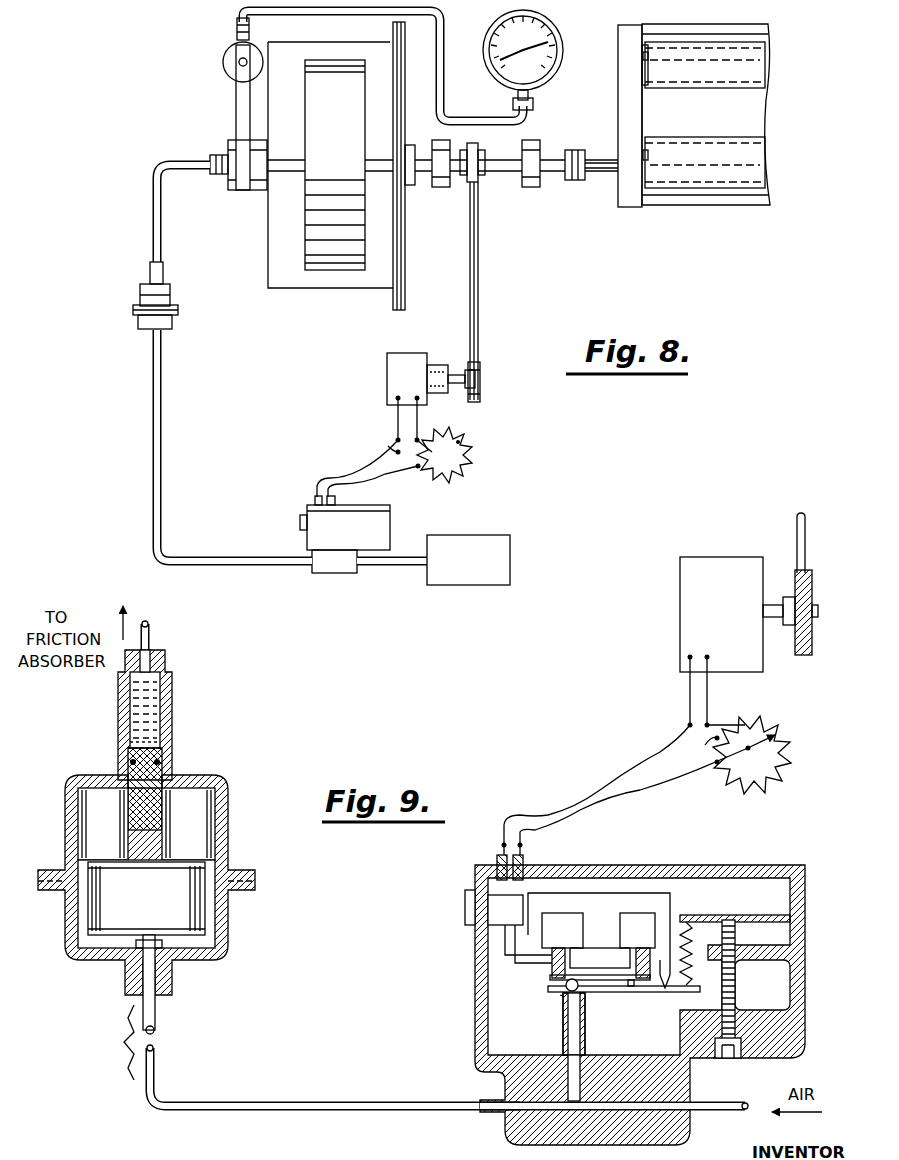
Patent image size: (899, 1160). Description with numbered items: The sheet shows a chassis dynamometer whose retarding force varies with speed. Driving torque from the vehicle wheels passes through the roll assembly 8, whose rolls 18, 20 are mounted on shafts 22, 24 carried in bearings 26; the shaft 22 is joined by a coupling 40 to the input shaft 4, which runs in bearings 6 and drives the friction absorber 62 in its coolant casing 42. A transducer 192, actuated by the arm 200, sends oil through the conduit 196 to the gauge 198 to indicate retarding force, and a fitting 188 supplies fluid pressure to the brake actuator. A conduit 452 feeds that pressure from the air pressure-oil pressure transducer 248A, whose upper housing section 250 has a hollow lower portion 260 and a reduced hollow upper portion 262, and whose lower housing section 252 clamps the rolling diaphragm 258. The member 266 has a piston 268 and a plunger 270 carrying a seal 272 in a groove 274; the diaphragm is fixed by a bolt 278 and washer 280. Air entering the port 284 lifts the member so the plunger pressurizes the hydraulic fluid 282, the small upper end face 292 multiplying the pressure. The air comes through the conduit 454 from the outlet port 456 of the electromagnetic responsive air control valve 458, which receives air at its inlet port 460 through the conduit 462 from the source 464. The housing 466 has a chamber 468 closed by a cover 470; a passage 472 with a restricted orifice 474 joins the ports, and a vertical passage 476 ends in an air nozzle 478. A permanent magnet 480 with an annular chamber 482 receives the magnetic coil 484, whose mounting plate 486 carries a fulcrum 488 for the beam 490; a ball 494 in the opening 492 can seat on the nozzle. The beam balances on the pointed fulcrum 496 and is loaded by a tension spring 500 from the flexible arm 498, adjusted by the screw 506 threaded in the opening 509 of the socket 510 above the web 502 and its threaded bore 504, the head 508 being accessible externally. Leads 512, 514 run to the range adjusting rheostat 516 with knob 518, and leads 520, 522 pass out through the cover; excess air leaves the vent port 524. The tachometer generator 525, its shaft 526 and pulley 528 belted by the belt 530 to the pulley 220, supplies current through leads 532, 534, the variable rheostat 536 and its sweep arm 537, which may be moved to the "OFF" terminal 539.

In FIG. 8, the input shaft 4 is at (498, 173).
In FIG. 8, the bearings 6 is at (441, 188).
In FIG. 8, the roll assembly 8 is at (700, 115).
In FIG. 8, the roll 18 is at (703, 152).
In FIG. 8, the roll 20 is at (707, 80).
In FIG. 8, the shaft 22 is at (598, 164).
In FIG. 8, the shaft 24 is at (652, 70).
In FIG. 8, the bearings 26 is at (643, 57).
In FIG. 8, the coupling 40 is at (575, 150).
In FIG. 8, the coolant casing 42 is at (410, 258).
In FIG. 8, the friction absorber 62 is at (325, 274).
In FIG. 8, the fitting 188 is at (217, 176).
In FIG. 8, the transducer 192 is at (222, 60).
In FIG. 8, the conduit 196 is at (238, 24).
In FIG. 8, the gauge 198 is at (562, 34).
In FIG. 8, the arm 200 is at (236, 108).
In FIG. 8, the pulley 220 is at (481, 152).
In FIG. 8, the air pressure-oil pressure transducer 248A is at (178, 292).
In FIG. 9, the air pressure-oil pressure transducer 248A is at (167, 824).
In FIG. 9, the upper housing section 250 is at (220, 796).
In FIG. 9, the lower housing section 252 is at (228, 910).
In FIG. 9, the rolling diaphragm 258 is at (256, 882).
In FIG. 9, the hollow lower portion 260 is at (80, 822).
In FIG. 9, the reduced hollow upper portion 262 is at (172, 690).
In FIG. 9, the member 266 is at (181, 852).
In FIG. 9, the piston 268 is at (118, 868).
In FIG. 9, the plunger 270 is at (128, 805).
In FIG. 9, the seal 272 is at (126, 761).
In FIG. 9, the groove 274 is at (172, 765).
In FIG. 9, the bolt 278 is at (190, 975).
In FIG. 9, the washer 280 is at (125, 950).
In FIG. 9, the hydraulic fluid 282 is at (136, 706).
In FIG. 9, the port 284 is at (156, 1004).
In FIG. 9, the upper end face 292 is at (130, 736).
In FIG. 8, the conduit 452 is at (154, 212).
In FIG. 9, the conduit 452 is at (152, 640).
In FIG. 8, the conduit 454 is at (158, 458).
In FIG. 9, the conduit 454 is at (160, 1062).
In FIG. 9, the outlet port 456 is at (496, 1119).
In FIG. 8, the electromagnetic responsive air control valve 458 is at (335, 527).
In FIG. 9, the electromagnetic responsive air control valve 458 is at (638, 935).
In FIG. 9, the inlet port 460 is at (695, 1106).
In FIG. 8, the conduit 462 is at (400, 568).
In FIG. 9, the conduit 462 is at (705, 1112).
In FIG. 8, the source 464 is at (468, 535).
In FIG. 8, the housing 466 is at (386, 530).
In FIG. 9, the housing 466 is at (795, 985).
In FIG. 9, the chamber 468 is at (700, 874).
In FIG. 8, the cover 470 is at (360, 508).
In FIG. 9, the cover 470 is at (725, 866).
In FIG. 9, the passage 472 is at (645, 1133).
In FIG. 9, the restricted orifice 474 is at (600, 1066).
In FIG. 9, the vertical passage 476 is at (577, 1060).
In FIG. 9, the air nozzle 478 is at (565, 1026).
In FIG. 9, the permanent magnet 480 is at (602, 893).
In FIG. 9, the annular chamber 482 is at (632, 921).
In FIG. 9, the magnetic coil 484 is at (552, 958).
In FIG. 9, the mounting plate 486 is at (603, 985).
In FIG. 9, the fulcrum 488 is at (617, 1035).
In FIG. 9, the beam 490 is at (598, 994).
In FIG. 9, the opening 492 is at (556, 998).
In FIG. 9, the ball 494 is at (562, 988).
In FIG. 9, the pointed fulcrum 496 is at (634, 990).
In FIG. 9, the flexible arm 498 is at (745, 915).
In FIG. 9, the tension spring 500 is at (701, 929).
In FIG. 9, the web 502 is at (740, 958).
In FIG. 9, the threaded bore 504 is at (738, 935).
In FIG. 9, the screw 506 is at (741, 991).
In FIG. 9, the head 508 is at (735, 1056).
In FIG. 9, the opening 509 is at (742, 1030).
In FIG. 9, the socket 510 is at (742, 1044).
In FIG. 9, the lead 512 is at (500, 963).
In FIG. 9, the lead 514 is at (500, 955).
In FIG. 9, the range adjusting rheostat 516 is at (490, 932).
In FIG. 8, the external operating knob 518 is at (299, 541).
In FIG. 9, the external operating knob 518 is at (466, 905).
In FIG. 8, the lead 520 is at (346, 478).
In FIG. 9, the lead 520 is at (500, 857).
In FIG. 8, the lead 522 is at (376, 474).
In FIG. 9, the lead 522 is at (530, 870).
In FIG. 9, the vent port 524 is at (480, 1040).
In FIG. 8, the tachometer generator 525 is at (411, 366).
In FIG. 9, the tachometer generator 525 is at (721, 571).
In FIG. 8, the shaft 526 is at (479, 378).
In FIG. 9, the shaft 526 is at (788, 596).
In FIG. 8, the pulley 528 is at (478, 362).
In FIG. 9, the pulley 528 is at (813, 652).
In FIG. 8, the belt 530 is at (480, 232).
In FIG. 9, the belt 530 is at (806, 520).
In FIG. 8, the lead 532 is at (419, 420).
In FIG. 9, the lead 532 is at (689, 695).
In FIG. 9, the lead 534 is at (710, 702).
In FIG. 8, the variable rheostat 536 is at (458, 442).
In FIG. 9, the variable rheostat 536 is at (779, 728).
In FIG. 8, the sweep arm 537 is at (470, 455).
In FIG. 9, the sweep arm 537 is at (760, 760).
In FIG. 8, the "OFF" terminal 539 is at (376, 440).
In FIG. 9, the "OFF" terminal 539 is at (695, 750).